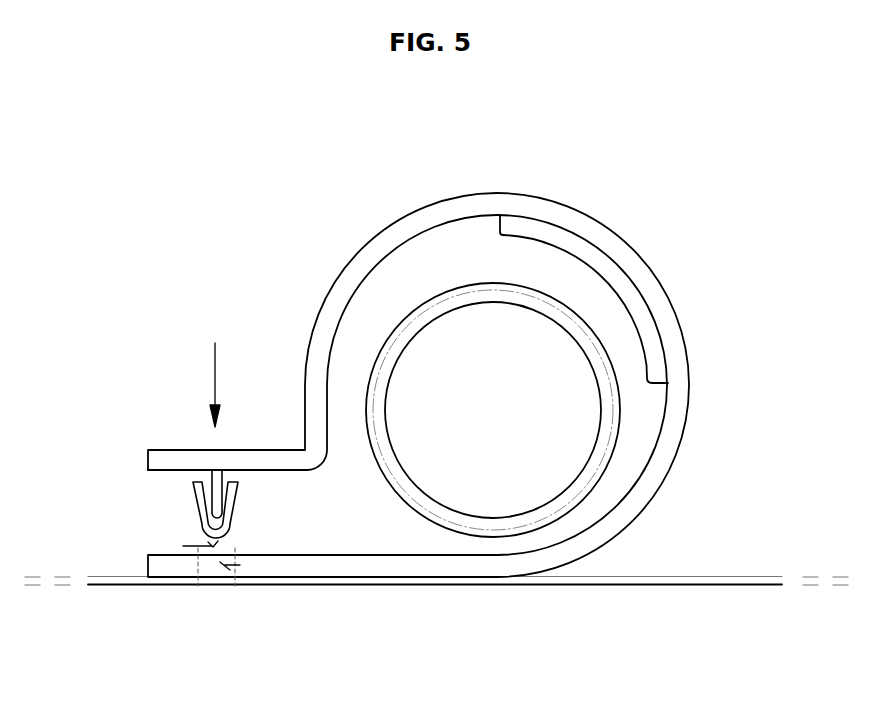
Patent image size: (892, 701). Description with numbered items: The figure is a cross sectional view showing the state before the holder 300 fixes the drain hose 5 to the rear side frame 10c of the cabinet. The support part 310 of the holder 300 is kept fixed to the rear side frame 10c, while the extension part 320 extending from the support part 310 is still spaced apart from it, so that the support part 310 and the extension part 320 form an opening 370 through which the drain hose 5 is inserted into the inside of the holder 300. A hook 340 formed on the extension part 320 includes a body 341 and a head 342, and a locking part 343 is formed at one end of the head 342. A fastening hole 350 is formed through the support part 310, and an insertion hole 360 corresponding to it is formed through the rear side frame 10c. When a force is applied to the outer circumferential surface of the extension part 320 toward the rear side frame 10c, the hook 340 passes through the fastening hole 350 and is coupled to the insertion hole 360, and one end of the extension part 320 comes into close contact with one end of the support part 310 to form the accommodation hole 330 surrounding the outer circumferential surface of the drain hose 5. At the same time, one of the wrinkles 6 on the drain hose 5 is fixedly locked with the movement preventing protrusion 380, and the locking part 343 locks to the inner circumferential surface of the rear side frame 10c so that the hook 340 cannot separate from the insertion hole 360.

The holder 300 is at (388, 392).
The support part 310 is at (462, 567).
The extension part 320 is at (410, 232).
The accommodation hole 330 is at (484, 256).
The hook 340 is at (130, 496).
The body 341 is at (216, 478).
The head 342 is at (216, 537).
The locking part 343 is at (197, 484).
The fastening hole 350 is at (240, 565).
The insertion hole 360 is at (223, 577).
The opening 370 is at (185, 546).
The movement preventing protrusion 380 is at (650, 332).
The drain hose 5 is at (568, 514).
The wrinkle 6 is at (620, 435).
The rear side frame 10c is at (727, 581).